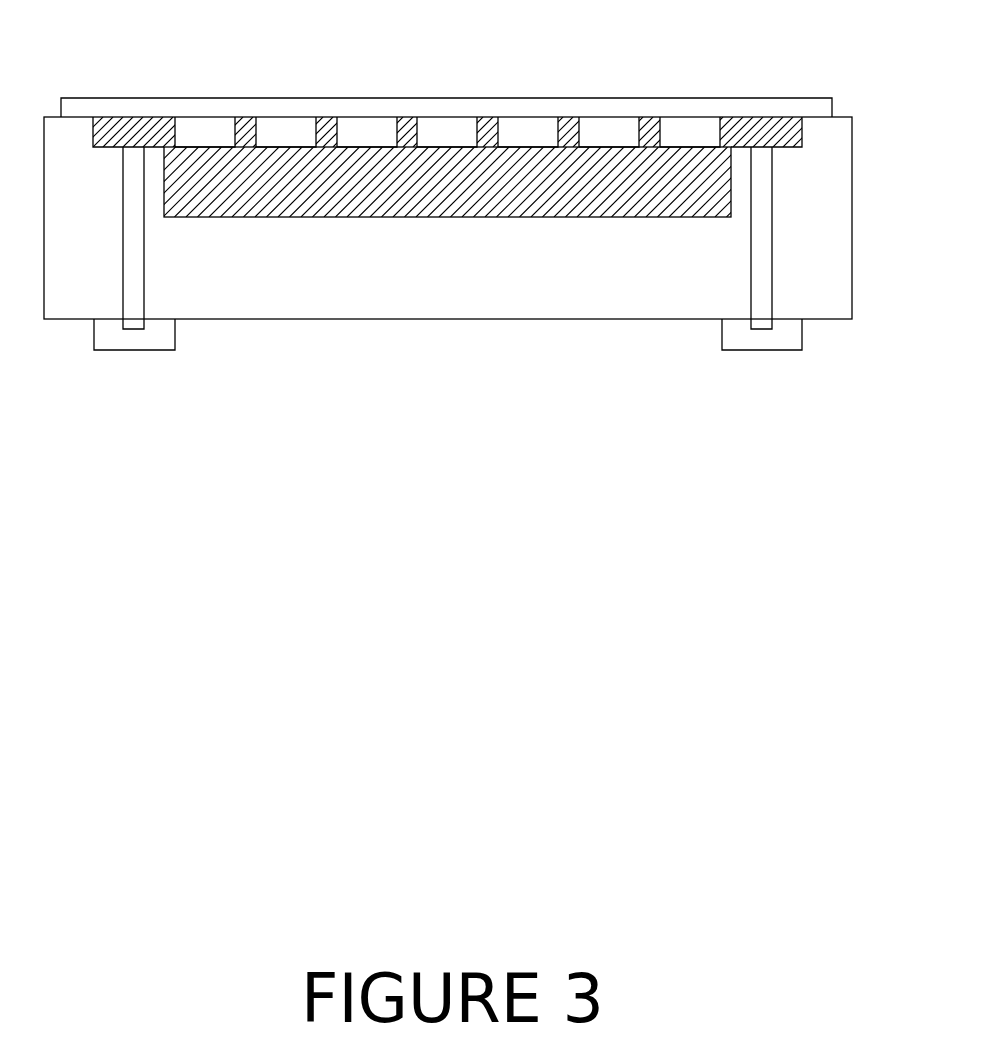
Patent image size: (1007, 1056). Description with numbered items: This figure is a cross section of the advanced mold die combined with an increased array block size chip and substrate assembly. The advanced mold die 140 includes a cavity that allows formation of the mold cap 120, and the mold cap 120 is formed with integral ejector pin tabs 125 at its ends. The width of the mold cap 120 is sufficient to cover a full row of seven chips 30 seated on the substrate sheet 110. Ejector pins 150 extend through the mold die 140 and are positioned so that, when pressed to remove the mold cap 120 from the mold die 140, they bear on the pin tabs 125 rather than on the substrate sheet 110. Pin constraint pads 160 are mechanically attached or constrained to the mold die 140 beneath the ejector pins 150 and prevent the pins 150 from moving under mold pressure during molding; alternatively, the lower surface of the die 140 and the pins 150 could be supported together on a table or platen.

The chips 30 is at (194, 127).
The substrate sheet 110 is at (740, 97).
The mold cap 120 is at (630, 217).
The ejector pin tabs 125 is at (123, 117).
The advanced mold die 140 is at (852, 162).
The ejector pins 150 is at (144, 285).
The pin constraint pads 160 is at (143, 350).